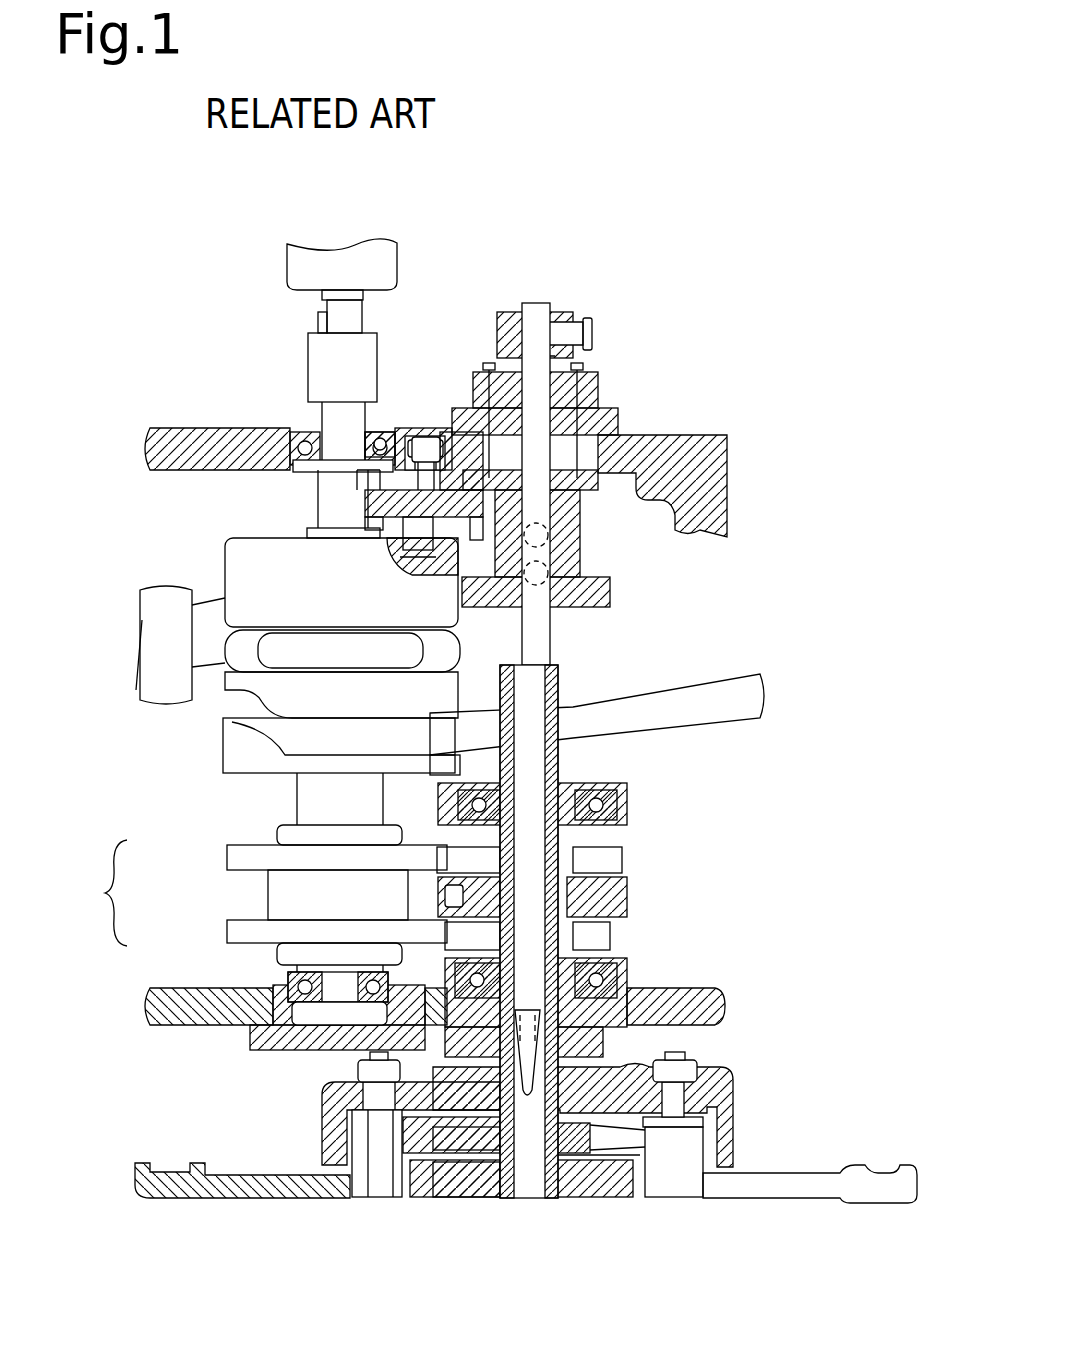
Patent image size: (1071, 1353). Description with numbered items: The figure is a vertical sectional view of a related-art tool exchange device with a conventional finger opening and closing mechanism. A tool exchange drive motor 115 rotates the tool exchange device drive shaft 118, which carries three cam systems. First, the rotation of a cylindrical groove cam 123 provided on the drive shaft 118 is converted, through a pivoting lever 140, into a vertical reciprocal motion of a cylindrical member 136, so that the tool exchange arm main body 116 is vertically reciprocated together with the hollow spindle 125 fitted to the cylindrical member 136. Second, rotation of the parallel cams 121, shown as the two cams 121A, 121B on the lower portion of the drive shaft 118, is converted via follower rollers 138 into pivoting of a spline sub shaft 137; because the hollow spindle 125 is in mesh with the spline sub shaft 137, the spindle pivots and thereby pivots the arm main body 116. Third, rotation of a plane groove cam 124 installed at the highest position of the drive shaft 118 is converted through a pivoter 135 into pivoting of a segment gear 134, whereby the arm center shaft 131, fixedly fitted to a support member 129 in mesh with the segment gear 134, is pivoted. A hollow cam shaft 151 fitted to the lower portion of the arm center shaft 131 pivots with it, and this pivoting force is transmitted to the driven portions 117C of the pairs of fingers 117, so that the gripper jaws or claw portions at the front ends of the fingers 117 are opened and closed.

The tool exchange drive motor 115 is at (385, 262).
The tool exchange arm main body 116 is at (735, 1100).
The fingers 117 is at (175, 1200).
The driven portions 117C is at (415, 1200).
The tool exchange device drive shaft 118 is at (320, 418).
The parallel cams 121 is at (91, 893).
The parallel cam 121A is at (228, 857).
The parallel cam 121B is at (228, 927).
The cylindrical groove cam 123 is at (230, 665).
The plane groove cam 124 is at (245, 540).
The hollow spindle 125 is at (578, 655).
The support member 129 is at (547, 320).
The arm center shaft 131 is at (532, 300).
The segment gear 134 is at (362, 495).
The pivoter 135 is at (417, 570).
The cylindrical member 136 is at (610, 598).
The spline sub shaft 137 is at (570, 790).
The follower rollers 138 is at (630, 855).
The pivoting lever 140 is at (210, 595).
The hollow cam shaft 151 is at (568, 1197).